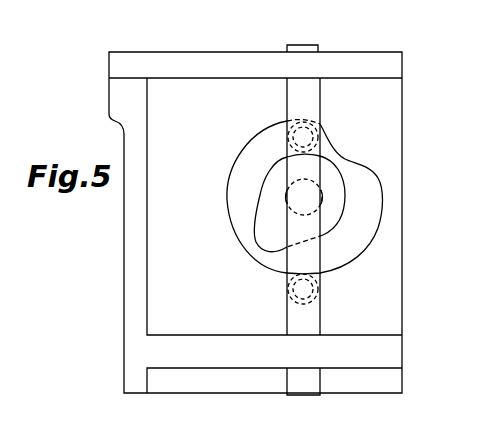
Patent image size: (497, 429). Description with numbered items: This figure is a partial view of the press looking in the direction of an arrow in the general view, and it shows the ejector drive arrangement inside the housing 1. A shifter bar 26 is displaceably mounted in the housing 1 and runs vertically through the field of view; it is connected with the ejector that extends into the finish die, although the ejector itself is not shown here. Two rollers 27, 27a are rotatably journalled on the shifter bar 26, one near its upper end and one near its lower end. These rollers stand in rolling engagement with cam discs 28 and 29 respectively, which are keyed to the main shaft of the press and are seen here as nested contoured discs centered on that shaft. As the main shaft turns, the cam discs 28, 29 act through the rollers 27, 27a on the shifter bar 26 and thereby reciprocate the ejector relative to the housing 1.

The housing 1 is at (222, 60).
The shifter bar 26 is at (310, 96).
The roller 27 is at (318, 128).
The roller 27a is at (289, 296).
The cam disc 28 is at (267, 225).
The cam disc 29 is at (242, 172).